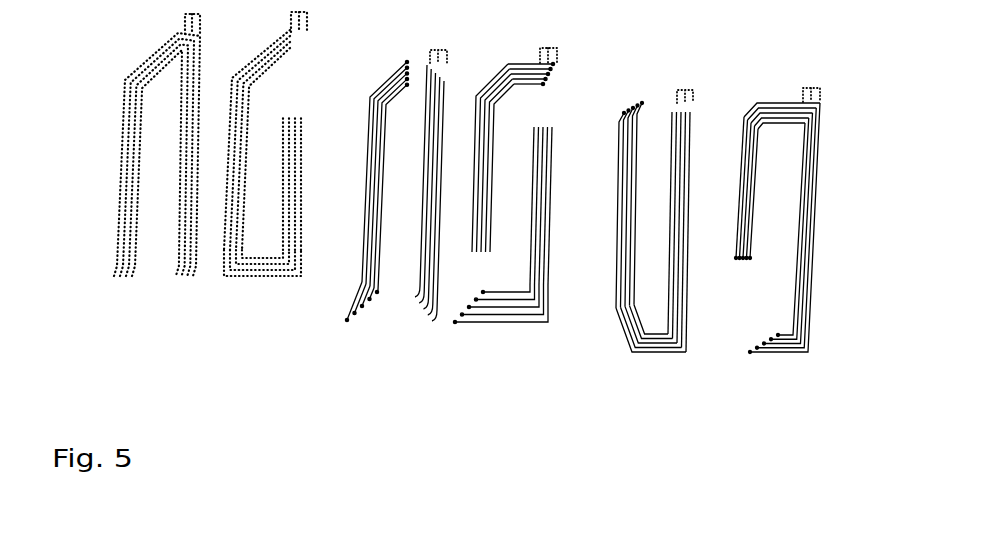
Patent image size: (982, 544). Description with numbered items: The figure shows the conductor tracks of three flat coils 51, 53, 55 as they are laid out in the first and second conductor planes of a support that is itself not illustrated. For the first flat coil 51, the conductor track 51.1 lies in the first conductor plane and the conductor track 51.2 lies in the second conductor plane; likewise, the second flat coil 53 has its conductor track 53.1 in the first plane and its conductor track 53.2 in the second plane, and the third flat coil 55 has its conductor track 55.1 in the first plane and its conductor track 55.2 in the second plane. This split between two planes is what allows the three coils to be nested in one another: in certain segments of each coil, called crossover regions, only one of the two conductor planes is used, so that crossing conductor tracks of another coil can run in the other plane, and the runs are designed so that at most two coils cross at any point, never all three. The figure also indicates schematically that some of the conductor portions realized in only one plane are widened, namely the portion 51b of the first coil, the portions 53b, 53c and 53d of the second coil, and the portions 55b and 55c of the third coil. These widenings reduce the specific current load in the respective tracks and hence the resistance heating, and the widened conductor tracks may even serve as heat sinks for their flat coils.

The flat coil 51 is at (210, 218).
The conductor track 51.1 is at (156, 290).
The conductor track 51.2 is at (265, 173).
The widened conductor portion 51b is at (260, 243).
The flat coil 53 is at (430, 219).
The conductor track 53.1 is at (375, 207).
The conductor track 53.2 is at (505, 193).
The widened conductor portion 53b is at (348, 293).
The widened conductor portion 53c is at (510, 290).
The widened conductor portion 53d is at (527, 60).
The flat coil 55 is at (721, 222).
The conductor track 55.1 is at (655, 185).
The conductor track 55.2 is at (783, 187).
The widened conductor portion 55b is at (638, 300).
The widened conductor portion 55c is at (779, 130).